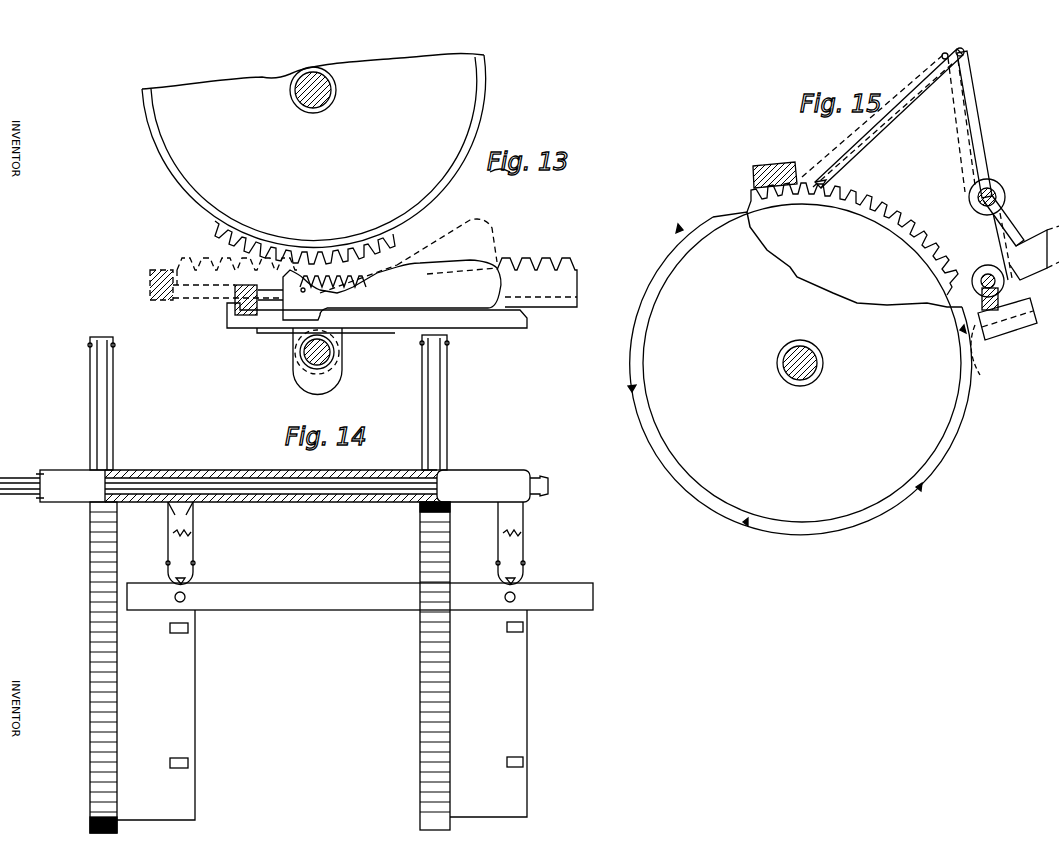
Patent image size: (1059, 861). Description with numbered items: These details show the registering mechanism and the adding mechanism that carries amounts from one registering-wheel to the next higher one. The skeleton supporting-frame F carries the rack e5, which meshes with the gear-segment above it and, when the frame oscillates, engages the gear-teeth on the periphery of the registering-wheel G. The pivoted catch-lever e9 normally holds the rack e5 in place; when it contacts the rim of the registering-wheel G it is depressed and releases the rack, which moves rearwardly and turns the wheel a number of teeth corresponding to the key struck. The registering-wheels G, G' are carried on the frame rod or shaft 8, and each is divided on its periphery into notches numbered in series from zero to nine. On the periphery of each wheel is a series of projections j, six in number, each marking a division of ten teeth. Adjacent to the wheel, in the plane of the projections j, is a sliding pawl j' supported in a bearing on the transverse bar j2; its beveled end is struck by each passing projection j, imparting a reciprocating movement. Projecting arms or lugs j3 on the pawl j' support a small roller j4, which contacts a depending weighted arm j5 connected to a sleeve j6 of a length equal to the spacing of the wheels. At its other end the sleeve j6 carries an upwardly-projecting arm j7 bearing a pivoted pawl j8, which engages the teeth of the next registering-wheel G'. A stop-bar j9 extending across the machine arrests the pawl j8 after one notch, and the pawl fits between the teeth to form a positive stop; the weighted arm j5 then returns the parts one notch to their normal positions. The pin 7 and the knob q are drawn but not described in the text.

In FIG. 13, the frame rod or shaft 8 is at (320, 90).
In FIG. 15, the frame rod or shaft 8 is at (807, 363).
In FIG. 13, the registering-wheel G is at (314, 158).
In FIG. 14, the registering-wheel G is at (157, 667).
In FIG. 15, the registering-wheel G is at (801, 359).
In FIG. 14, the registering-wheel G' is at (487, 666).
In FIG. 13, the rack e5 is at (532, 275).
In FIG. 13, the pivoted catch-lever e9 is at (368, 269).
In FIG. 13, the pin 7 is at (304, 357).
In FIG. 13, the skeleton supporting-frame F is at (470, 318).
In FIG. 14, the projections j is at (358, 691).
In FIG. 15, the projections j is at (821, 394).
In FIG. 14, the sliding pawl j' is at (345, 595).
In FIG. 15, the sliding pawl j' is at (979, 352).
In FIG. 14, the transverse bar j2 is at (596, 598).
In FIG. 15, the transverse bar j2 is at (1020, 325).
In FIG. 14, the projecting arms or lugs j3 is at (195, 578).
In FIG. 14, the small roller j4 is at (523, 550).
In FIG. 15, the small roller j4 is at (975, 268).
In FIG. 14, the depending weighted arm j5 is at (192, 538).
In FIG. 15, the depending weighted arm j5 is at (1010, 225).
In FIG. 14, the sleeve j6 is at (66, 482).
In FIG. 15, the sleeve j6 is at (1003, 190).
In FIG. 14, the upwardly-projecting arm j7 is at (96, 397).
In FIG. 15, the upwardly-projecting arm j7 is at (978, 103).
In FIG. 14, the pivoted pawl j8 is at (112, 398).
In FIG. 15, the pivoted pawl j8 is at (893, 135).
In FIG. 15, the stop-bar j9 is at (783, 162).
In FIG. 14, the knob q is at (550, 486).
In FIG. 15, the knob q is at (996, 197).